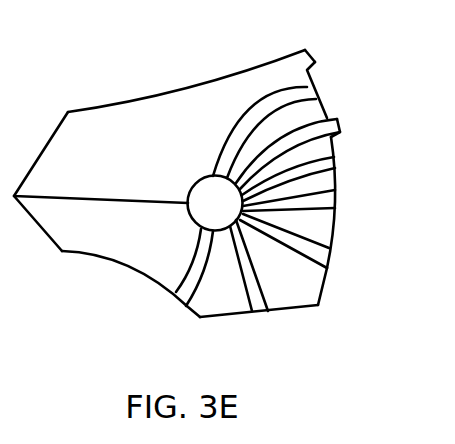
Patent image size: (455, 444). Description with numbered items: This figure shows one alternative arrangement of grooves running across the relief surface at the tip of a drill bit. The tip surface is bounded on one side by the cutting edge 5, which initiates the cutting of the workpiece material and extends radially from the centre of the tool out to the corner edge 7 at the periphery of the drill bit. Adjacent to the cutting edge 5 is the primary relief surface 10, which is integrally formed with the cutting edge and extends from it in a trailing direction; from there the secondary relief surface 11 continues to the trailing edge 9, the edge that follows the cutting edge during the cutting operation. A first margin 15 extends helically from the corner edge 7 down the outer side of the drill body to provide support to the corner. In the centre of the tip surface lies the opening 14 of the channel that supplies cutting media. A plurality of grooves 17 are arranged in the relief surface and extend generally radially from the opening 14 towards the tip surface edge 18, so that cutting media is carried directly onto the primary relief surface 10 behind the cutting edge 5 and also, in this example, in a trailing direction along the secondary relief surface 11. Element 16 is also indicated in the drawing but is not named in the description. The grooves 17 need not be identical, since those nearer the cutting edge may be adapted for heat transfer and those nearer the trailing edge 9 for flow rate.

The cutting edge 5 is at (233, 78).
The corner edge 7 is at (305, 48).
The trailing edge 9 is at (290, 313).
The primary relief surface 10 is at (148, 116).
The secondary relief surface 11 is at (157, 263).
The opening 14 is at (197, 213).
The first margin 15 is at (315, 58).
The projecting rib 16 is at (338, 127).
The groove 17 is at (308, 90).
The tip surface edge 18 is at (335, 238).